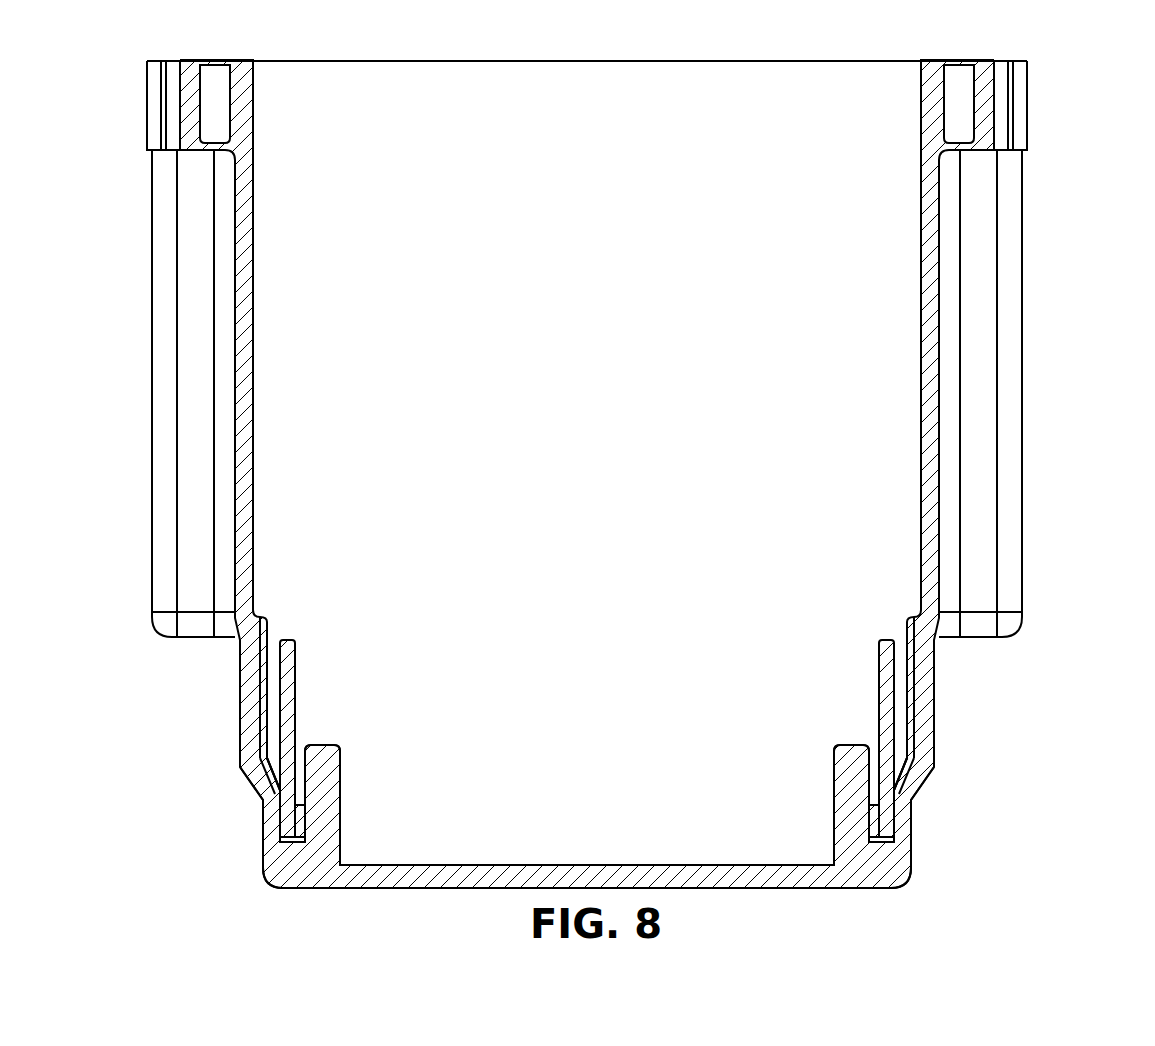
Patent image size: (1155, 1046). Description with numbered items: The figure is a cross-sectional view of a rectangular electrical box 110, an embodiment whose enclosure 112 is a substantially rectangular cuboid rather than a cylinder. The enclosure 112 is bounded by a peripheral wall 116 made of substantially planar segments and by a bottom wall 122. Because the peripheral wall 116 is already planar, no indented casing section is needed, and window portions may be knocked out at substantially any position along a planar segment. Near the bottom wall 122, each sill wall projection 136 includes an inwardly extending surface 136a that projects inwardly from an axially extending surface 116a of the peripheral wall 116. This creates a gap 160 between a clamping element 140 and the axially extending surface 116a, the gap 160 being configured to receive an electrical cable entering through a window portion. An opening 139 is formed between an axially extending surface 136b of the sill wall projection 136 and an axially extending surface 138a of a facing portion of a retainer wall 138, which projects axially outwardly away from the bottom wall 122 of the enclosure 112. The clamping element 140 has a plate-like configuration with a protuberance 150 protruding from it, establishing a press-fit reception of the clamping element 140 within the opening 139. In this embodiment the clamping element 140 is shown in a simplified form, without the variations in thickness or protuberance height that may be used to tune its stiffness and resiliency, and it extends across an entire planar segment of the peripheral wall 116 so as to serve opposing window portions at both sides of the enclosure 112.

The electrical box 110 is at (1053, 118).
The enclosure 112 is at (120, 128).
The peripheral wall 116 is at (250, 543).
The axially extending surface 116a is at (272, 645).
The gap 160 is at (284, 622).
The clamping element 140 is at (290, 658).
The retainer wall 138 is at (322, 750).
The sill wall projection 136 is at (258, 778).
The inwardly extending surface 136a is at (277, 782).
The axially extending surface 136b is at (286, 792).
The axially extending surface 138a is at (303, 830).
The protuberance 150 is at (300, 797).
The opening 139 is at (300, 817).
The bottom wall 122 is at (276, 870).